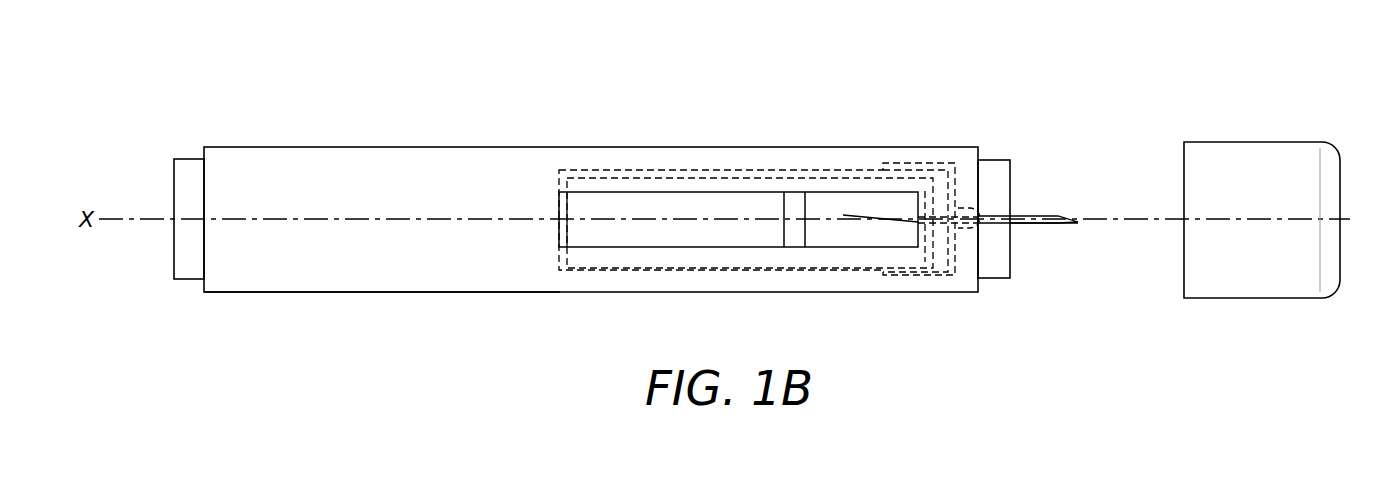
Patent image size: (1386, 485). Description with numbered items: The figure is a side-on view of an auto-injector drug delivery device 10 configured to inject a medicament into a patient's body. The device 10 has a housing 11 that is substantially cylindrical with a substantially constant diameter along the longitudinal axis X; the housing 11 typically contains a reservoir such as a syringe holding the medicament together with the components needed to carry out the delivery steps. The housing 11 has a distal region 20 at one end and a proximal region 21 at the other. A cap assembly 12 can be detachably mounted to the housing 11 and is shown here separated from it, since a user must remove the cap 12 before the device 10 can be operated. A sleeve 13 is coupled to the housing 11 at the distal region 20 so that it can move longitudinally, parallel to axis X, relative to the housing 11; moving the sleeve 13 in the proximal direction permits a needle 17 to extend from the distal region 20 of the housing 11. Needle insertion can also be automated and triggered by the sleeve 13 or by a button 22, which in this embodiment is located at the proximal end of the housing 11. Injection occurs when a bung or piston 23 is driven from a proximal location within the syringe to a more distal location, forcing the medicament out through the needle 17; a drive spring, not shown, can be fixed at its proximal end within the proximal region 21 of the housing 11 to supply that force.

The drug delivery device 10 is at (937, 107).
The housing 11 is at (788, 157).
The cap assembly 12 is at (1255, 158).
The sleeve 13 is at (1001, 168).
The needle 17 is at (1052, 214).
The distal region 20 is at (963, 283).
The proximal region 21 is at (225, 284).
The button 22 is at (188, 273).
The piston 23 is at (795, 242).